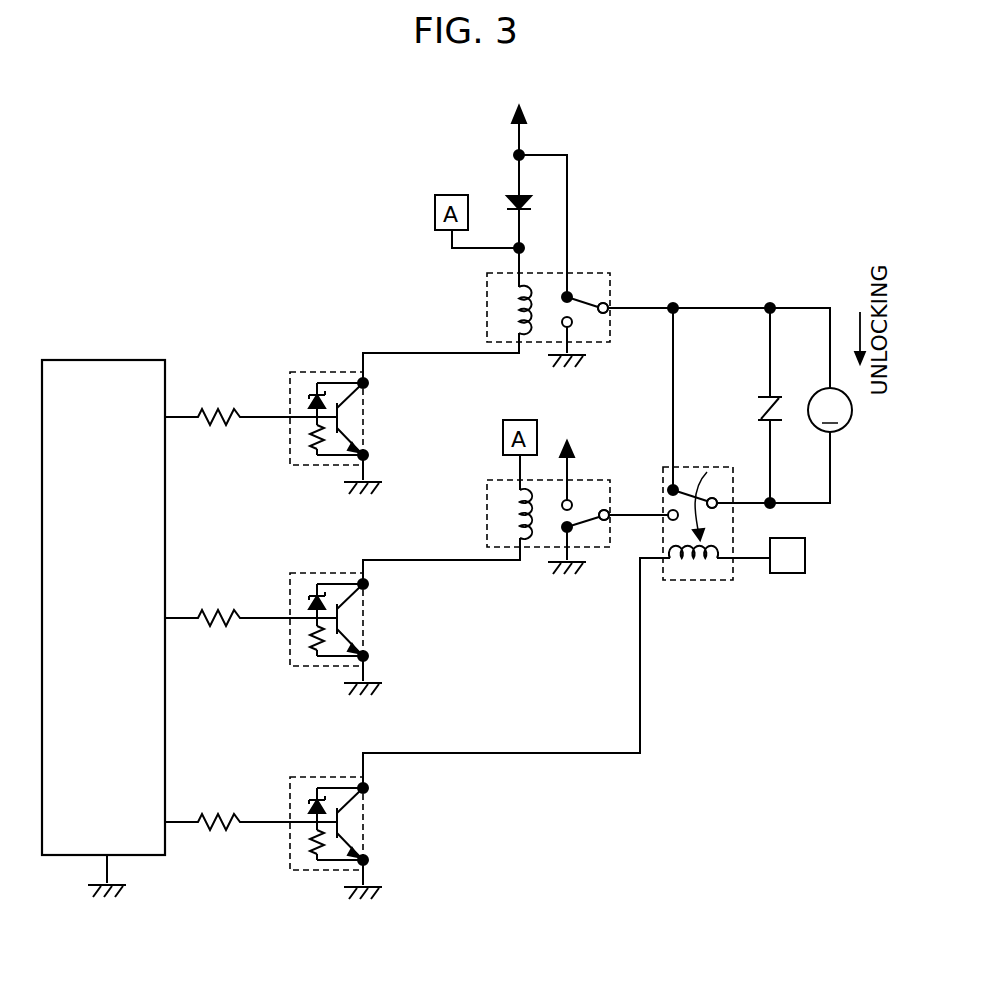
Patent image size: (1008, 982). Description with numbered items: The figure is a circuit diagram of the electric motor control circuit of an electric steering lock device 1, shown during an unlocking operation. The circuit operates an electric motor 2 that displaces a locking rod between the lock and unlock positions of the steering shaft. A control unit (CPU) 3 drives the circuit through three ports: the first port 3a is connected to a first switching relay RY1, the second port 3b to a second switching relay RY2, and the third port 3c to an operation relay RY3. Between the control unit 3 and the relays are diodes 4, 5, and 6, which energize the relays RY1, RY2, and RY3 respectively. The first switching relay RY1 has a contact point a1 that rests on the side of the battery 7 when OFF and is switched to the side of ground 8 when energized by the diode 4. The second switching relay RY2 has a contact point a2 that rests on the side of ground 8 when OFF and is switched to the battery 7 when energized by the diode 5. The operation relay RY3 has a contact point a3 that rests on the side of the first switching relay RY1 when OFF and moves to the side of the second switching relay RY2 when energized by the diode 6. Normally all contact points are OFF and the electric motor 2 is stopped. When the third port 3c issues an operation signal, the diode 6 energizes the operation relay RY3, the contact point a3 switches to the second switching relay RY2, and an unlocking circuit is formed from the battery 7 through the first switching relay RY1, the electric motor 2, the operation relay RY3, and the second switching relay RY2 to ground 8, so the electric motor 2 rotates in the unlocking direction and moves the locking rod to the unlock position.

The electric steering lock device 1 is at (710, 212).
The electric motor 2 is at (852, 418).
The control unit (CPU) 3 is at (108, 358).
The first port (PORT1) 3a is at (170, 416).
The second port (PORT2) 3b is at (170, 617).
The third port (PORT3) 3c is at (170, 821).
The diode 4 is at (306, 372).
The diode 5 is at (306, 575).
The diode 6 is at (307, 777).
The battery 7 is at (510, 113).
The ground 8 is at (580, 360).
The contact point a1 is at (590, 305).
The contact point a2 is at (590, 528).
The contact point a3 is at (697, 500).
The first switching relay RY1 is at (497, 302).
The second switching relay RY2 is at (497, 526).
The operation relay RY3 is at (710, 573).